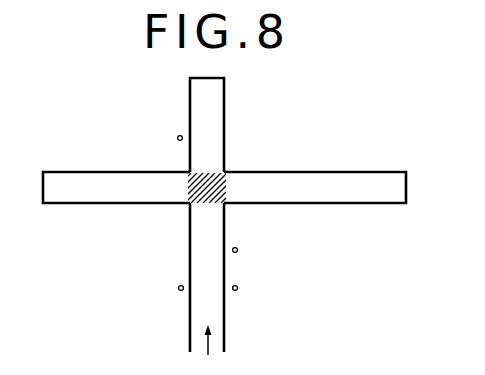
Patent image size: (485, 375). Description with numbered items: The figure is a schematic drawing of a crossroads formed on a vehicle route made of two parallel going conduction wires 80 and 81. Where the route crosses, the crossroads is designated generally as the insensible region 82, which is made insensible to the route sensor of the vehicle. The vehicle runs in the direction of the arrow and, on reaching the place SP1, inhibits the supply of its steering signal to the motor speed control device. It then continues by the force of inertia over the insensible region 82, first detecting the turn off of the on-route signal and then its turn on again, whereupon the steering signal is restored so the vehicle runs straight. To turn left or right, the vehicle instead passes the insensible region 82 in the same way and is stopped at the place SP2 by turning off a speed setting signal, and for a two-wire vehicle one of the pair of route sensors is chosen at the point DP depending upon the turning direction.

The conduction wire 80 is at (224, 332).
The conduction wire 81 is at (190, 326).
The insensible region 82 is at (222, 185).
The place SP1 is at (251, 246).
The place SP2 is at (161, 131).
The point DP is at (222, 284).